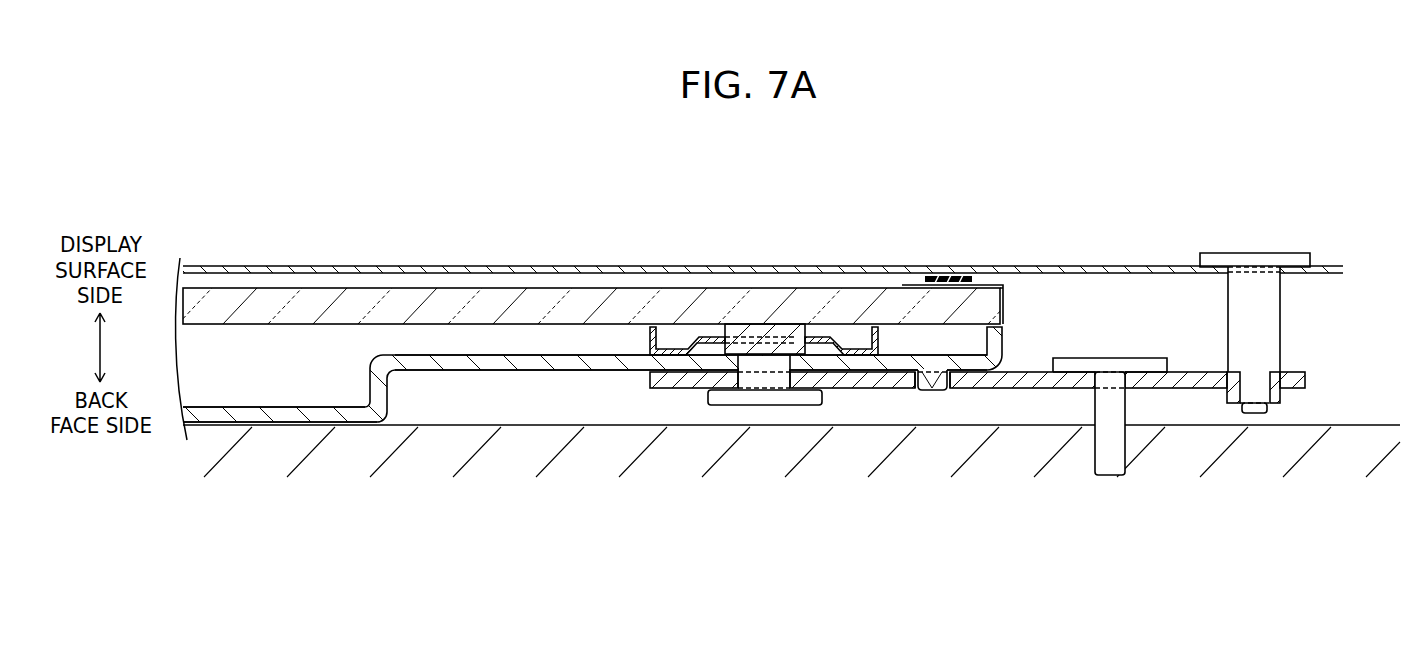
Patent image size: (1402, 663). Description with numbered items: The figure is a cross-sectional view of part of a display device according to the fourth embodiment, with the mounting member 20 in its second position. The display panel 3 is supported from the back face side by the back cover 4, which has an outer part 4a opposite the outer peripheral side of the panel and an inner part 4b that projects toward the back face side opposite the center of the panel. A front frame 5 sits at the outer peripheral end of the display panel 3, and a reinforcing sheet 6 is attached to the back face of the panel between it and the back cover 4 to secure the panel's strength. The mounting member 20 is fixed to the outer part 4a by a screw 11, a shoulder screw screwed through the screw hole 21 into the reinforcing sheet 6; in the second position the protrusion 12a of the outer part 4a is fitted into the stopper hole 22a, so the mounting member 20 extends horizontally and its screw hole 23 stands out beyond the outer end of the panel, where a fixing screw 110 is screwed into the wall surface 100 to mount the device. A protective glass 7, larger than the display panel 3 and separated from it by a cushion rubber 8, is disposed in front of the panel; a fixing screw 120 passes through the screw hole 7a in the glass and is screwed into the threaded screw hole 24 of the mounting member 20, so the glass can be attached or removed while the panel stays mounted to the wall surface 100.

The display panel 3 is at (460, 290).
The back cover 4 is at (628, 417).
The outer part 4a is at (535, 371).
The inner part 4b is at (285, 423).
The front frame 5 is at (903, 285).
The reinforcing sheet 6 is at (815, 338).
The protective glass 7 is at (1053, 266).
The screw hole 7a is at (1286, 285).
The cushion rubber 8 is at (950, 276).
The screw 11 is at (767, 406).
The protrusion 12a is at (930, 392).
The mounting member 20 is at (680, 389).
The screw hole 21 is at (737, 383).
The stopper hole 22a is at (953, 399).
The screw hole 23 is at (1129, 399).
The screw hole 24 is at (1237, 409).
The wall surface 100 is at (1384, 392).
The fixing screw 110 is at (1110, 409).
The fixing screw 120 is at (1255, 359).